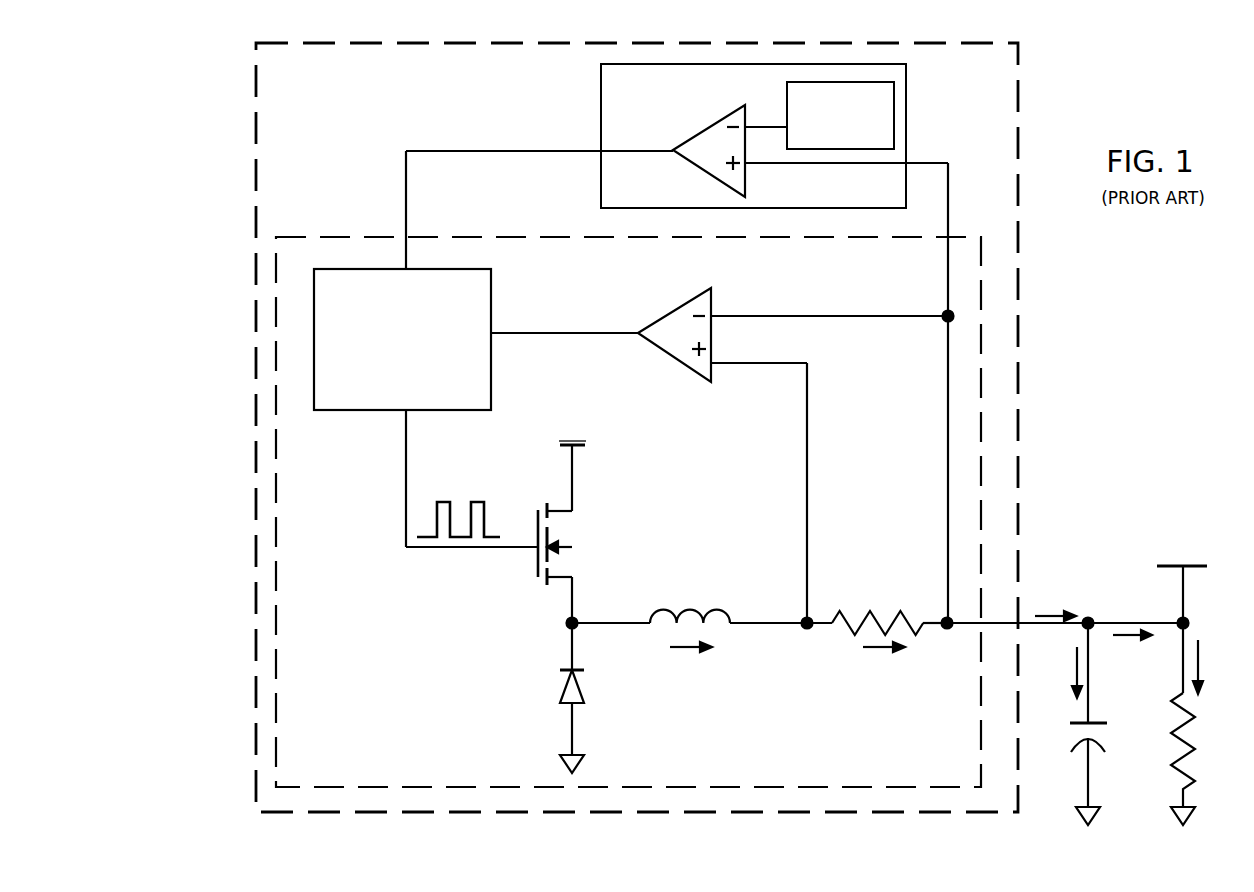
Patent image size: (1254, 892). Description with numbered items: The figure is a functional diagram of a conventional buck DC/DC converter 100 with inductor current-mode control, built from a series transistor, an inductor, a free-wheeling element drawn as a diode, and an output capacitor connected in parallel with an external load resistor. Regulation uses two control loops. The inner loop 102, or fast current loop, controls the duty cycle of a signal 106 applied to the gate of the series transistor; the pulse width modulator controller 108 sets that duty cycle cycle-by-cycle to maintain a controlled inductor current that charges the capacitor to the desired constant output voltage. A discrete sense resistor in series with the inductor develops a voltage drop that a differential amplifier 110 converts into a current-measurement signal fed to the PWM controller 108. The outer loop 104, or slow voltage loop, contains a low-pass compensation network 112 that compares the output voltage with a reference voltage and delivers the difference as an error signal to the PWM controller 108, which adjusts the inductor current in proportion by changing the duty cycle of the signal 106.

The buck DC/DC converter 100 is at (1139, 329).
The inner loop 102 is at (280, 742).
The outer loop 104 is at (255, 530).
The signal 106 is at (440, 497).
The pulse width modulator controller 108 is at (339, 411).
The differential amplifier 110 is at (676, 358).
The low-pass compensation network 112 is at (599, 89).